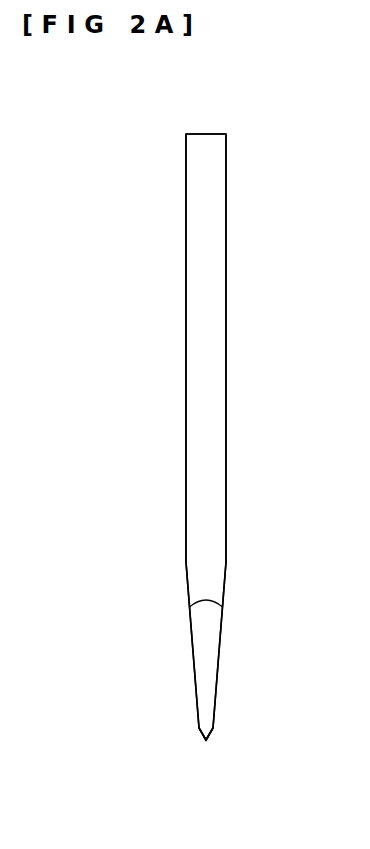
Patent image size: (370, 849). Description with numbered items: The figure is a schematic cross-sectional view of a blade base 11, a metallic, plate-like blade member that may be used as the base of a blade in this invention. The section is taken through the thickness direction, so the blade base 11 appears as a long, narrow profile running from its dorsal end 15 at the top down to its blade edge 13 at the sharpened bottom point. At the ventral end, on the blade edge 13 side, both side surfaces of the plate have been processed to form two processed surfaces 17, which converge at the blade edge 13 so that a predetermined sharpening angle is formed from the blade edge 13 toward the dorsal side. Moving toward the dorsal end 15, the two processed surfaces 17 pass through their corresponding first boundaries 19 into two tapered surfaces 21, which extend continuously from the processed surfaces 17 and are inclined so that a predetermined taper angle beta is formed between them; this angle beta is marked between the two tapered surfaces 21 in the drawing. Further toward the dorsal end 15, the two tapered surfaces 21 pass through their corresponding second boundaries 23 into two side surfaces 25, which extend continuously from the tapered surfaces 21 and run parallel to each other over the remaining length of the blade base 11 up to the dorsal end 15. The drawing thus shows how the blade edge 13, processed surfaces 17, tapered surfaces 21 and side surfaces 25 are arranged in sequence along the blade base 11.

The blade base 11 is at (169, 173).
The blade edge 13 is at (205, 745).
The dorsal end 15 is at (206, 133).
The processed surfaces 17 is at (199, 738).
The first boundaries 19 is at (201, 729).
The tapered surfaces 21 is at (195, 647).
The second boundaries 23 is at (186, 565).
The side surfaces 25 is at (186, 363).
The taper angle beta is at (206, 582).